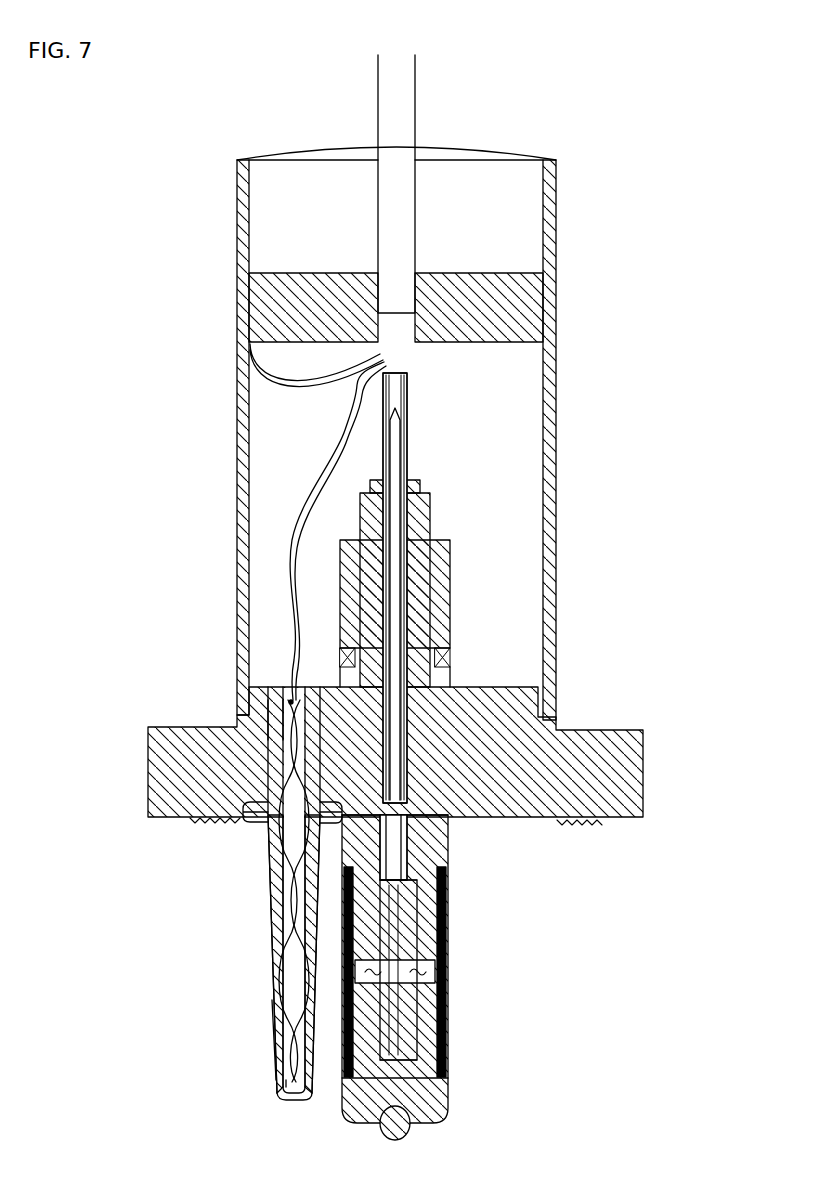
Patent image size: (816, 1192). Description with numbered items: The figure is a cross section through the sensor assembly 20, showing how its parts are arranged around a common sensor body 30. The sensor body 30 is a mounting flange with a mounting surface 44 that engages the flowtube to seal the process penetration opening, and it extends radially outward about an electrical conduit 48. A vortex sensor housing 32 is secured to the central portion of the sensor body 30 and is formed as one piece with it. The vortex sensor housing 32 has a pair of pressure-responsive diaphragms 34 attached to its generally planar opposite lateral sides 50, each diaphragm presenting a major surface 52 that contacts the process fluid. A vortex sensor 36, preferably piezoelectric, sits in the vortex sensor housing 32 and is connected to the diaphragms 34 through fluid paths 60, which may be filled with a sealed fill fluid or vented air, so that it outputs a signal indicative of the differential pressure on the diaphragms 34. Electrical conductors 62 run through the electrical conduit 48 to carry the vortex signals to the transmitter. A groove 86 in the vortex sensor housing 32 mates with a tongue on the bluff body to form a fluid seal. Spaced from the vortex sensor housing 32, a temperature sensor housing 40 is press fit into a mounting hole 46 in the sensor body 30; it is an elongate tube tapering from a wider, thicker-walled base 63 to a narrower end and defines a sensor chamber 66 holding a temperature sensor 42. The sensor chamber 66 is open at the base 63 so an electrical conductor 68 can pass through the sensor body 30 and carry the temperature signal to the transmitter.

The sensor assembly 20 is at (662, 256).
The sensor body 30 is at (643, 771).
The vortex sensor housing 32 is at (450, 836).
The pressure-responsive diaphragms 34 is at (347, 868).
The vortex sensor 36 is at (447, 1009).
The temperature sensor housing 40 is at (277, 947).
The temperature sensor 42 is at (290, 1033).
The mounting surface 44 is at (209, 823).
The mounting hole 46 is at (273, 718).
The electrical conduit 48 is at (415, 689).
The lateral sides 50 is at (343, 1079).
The major surface 52 is at (343, 941).
The fluid paths 60 is at (355, 1001).
The electrical conductors 62 is at (395, 458).
The base 63 is at (267, 823).
The sensor chamber 66 is at (290, 1085).
The electrical conductor 68 is at (290, 701).
The groove 86 is at (393, 1106).